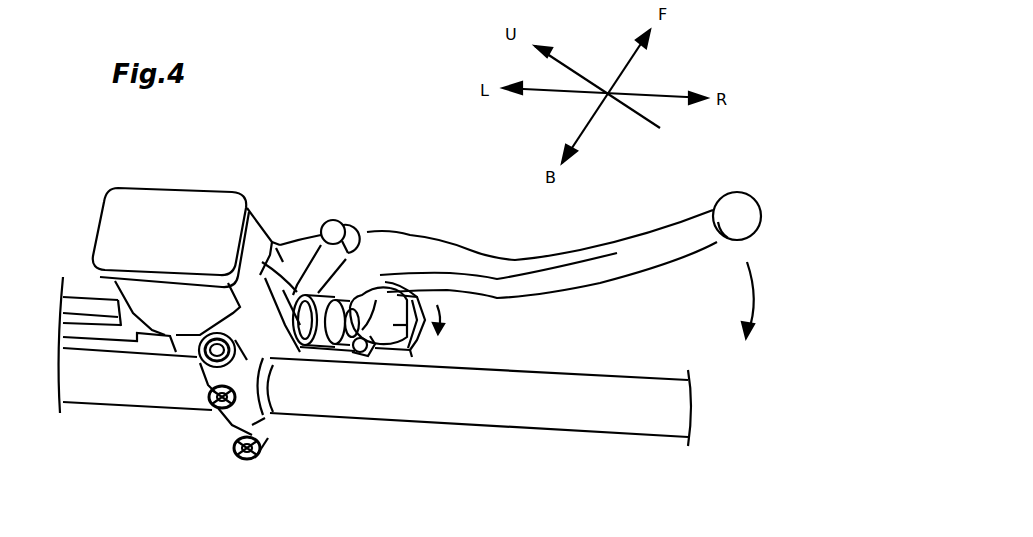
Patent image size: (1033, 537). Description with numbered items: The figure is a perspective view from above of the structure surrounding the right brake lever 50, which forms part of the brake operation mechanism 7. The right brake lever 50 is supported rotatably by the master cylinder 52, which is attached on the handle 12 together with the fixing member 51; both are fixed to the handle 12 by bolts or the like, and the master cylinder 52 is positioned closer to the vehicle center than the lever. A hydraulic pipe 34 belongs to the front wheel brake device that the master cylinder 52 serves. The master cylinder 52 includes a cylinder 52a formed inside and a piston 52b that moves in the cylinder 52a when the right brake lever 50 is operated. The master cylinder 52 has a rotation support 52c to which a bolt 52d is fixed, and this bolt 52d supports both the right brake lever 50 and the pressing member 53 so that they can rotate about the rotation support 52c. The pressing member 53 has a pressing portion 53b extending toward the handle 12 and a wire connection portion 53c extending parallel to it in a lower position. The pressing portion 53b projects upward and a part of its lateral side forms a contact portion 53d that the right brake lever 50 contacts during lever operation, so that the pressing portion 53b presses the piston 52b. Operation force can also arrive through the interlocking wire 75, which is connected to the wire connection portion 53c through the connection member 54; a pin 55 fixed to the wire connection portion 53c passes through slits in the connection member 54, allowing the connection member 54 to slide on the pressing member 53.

The brake operation mechanism 7 is at (398, 110).
The handle 12 is at (580, 418).
The hydraulic pipe 34 is at (78, 300).
The right brake lever 50 is at (682, 252).
The fixing member 51 is at (210, 425).
The master cylinder 52 is at (278, 226).
The cylinder 52a is at (296, 290).
The piston 52b is at (360, 292).
The rotation support 52c is at (348, 245).
The bolt 52d is at (332, 221).
The pressing member 53 is at (444, 350).
The pressing portion 53b is at (393, 300).
The wire connection portion 53c is at (394, 352).
The contact portion 53d is at (382, 300).
The connection member 54 is at (333, 358).
The pin 55 is at (360, 354).
The interlocking wire 75 is at (95, 330).